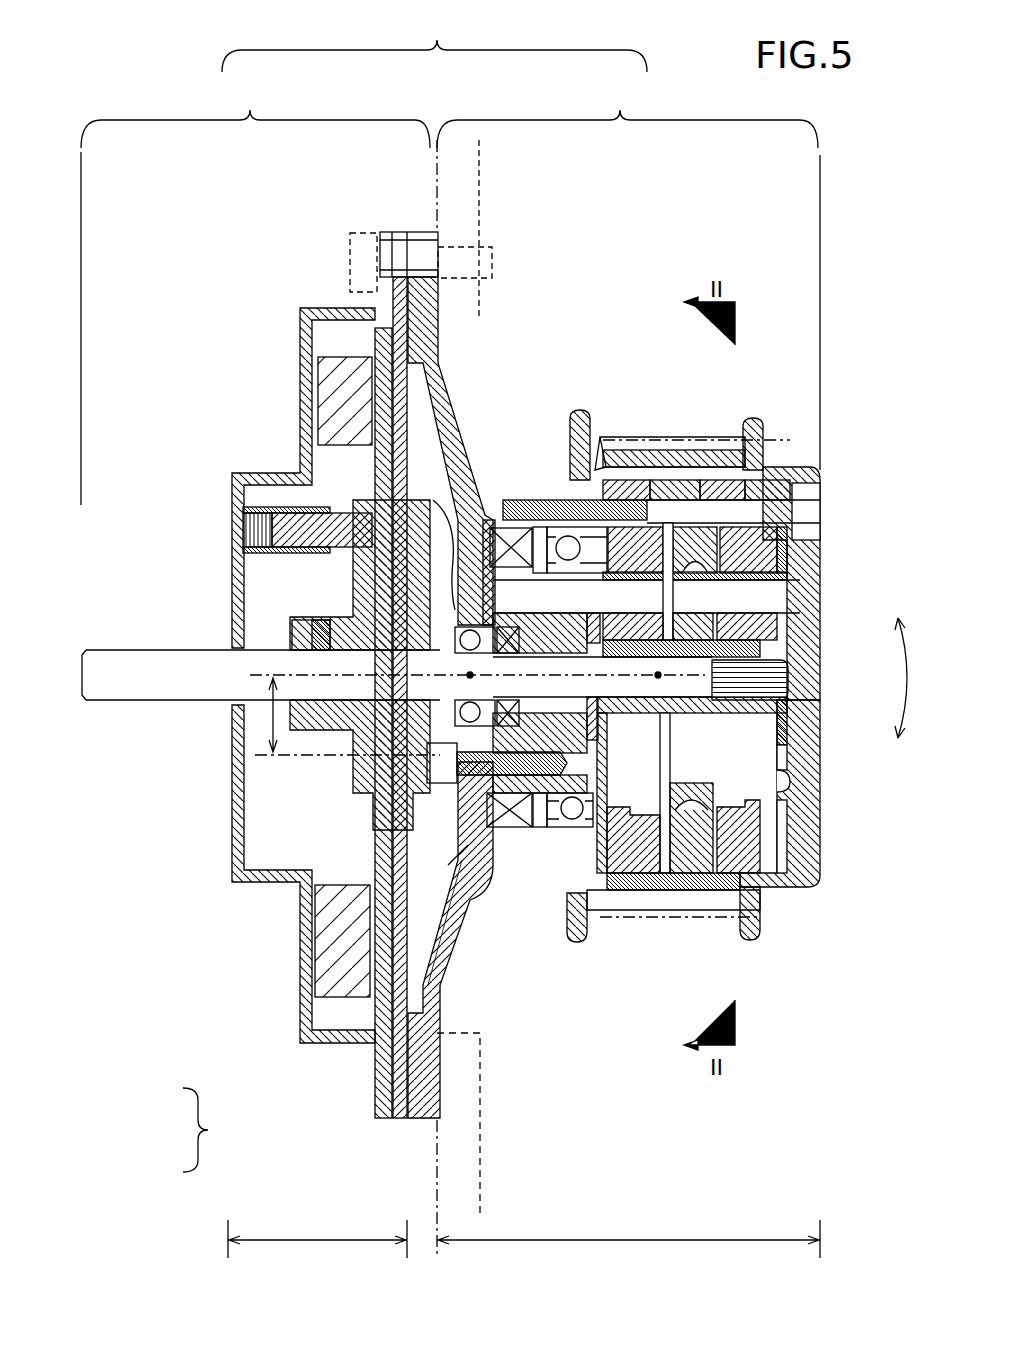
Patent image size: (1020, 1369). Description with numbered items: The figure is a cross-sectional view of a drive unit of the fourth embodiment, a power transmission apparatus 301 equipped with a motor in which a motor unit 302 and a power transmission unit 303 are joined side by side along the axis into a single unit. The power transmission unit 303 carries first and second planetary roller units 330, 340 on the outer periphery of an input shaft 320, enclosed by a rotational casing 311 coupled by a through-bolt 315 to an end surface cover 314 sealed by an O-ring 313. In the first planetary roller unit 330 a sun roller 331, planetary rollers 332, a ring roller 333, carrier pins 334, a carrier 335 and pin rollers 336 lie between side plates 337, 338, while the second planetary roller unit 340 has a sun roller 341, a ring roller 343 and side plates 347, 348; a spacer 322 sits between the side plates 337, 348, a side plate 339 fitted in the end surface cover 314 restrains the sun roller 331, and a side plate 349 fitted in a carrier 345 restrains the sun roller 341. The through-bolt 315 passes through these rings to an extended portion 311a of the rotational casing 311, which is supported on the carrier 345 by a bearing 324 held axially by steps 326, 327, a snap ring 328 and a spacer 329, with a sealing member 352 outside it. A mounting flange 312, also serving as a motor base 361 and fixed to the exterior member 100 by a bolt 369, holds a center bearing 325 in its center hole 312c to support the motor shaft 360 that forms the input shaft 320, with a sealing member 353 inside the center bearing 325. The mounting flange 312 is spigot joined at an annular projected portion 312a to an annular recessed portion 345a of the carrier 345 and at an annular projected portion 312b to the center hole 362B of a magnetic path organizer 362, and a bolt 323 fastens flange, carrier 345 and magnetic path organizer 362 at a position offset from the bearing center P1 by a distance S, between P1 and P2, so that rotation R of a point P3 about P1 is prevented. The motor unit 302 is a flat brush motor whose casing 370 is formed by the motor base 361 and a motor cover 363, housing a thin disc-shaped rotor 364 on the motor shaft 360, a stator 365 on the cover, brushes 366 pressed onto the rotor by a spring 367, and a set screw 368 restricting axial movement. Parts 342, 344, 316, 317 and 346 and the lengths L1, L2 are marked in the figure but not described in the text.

The power transmission apparatus equipped with a motor 301 is at (437, 40).
The motor unit 302 is at (250, 110).
The power transmission unit 303 is at (620, 110).
The bolt 369 is at (365, 232).
The mounting flange 312 is at (440, 353).
The motor base 361 is at (269, 697).
The motor cover 363 is at (236, 818).
The rotor 364 is at (378, 826).
The casing 370 is at (211, 1130).
The brushes 366 is at (290, 508).
The stator 365 is at (322, 948).
The spring 367 is at (243, 531).
The set screw 368 is at (292, 603).
The motor shaft 360 is at (116, 650).
The annular projected portion 312b is at (368, 566).
The center hole 362B is at (337, 600).
The center hole 312c is at (448, 700).
The bolt 323 is at (403, 785).
The center bearing 325 is at (440, 510).
The magnetic path organizer 362 is at (445, 945).
The sealing member 353 is at (522, 630).
The rotational casing 311 is at (600, 450).
The extended portion 311a is at (545, 466).
The bearing 344 is at (550, 525).
The sealing member 352 is at (512, 527).
The bearing 324 is at (518, 500).
The retaining ring 342 is at (622, 478).
The annular projected portion 312a is at (480, 495).
The annular recessed portion 345a is at (497, 582).
The ring-shaped side plate 349 is at (597, 730).
The spacer 329 is at (586, 450).
The carrier 335 is at (658, 480).
The stator 316 is at (672, 480).
The ring-shaped spacer 322 is at (716, 484).
The bolt 317 is at (704, 498).
The O-ring 313 is at (760, 460).
The through-bolt 315 is at (812, 512).
The end surface cover 314 is at (800, 545).
The pin roller 336 is at (758, 580).
The carrier pin 334 is at (770, 598).
The shaft 346 is at (645, 578).
The planetary roller 332 is at (780, 628).
The input shaft 320 is at (790, 672).
The rotation R is at (908, 678).
The carrier 345 is at (585, 760).
The sun roller 341 is at (668, 730).
The side plate 347 is at (607, 888).
The ring roller 343 is at (660, 838).
The side plate 348 is at (693, 838).
The second planetary roller unit 340 is at (644, 930).
The step 326 is at (568, 867).
The step 327 is at (546, 828).
The snap ring 328 is at (540, 793).
The ring roller 333 is at (812, 840).
The first planetary roller unit 330 is at (764, 946).
The sun roller 331 is at (782, 708).
The ring-shaped side plate 339 is at (784, 735).
The ring-shaped side plate 338 is at (786, 765).
The ring-shaped side plate 337 is at (786, 800).
The distance S is at (347, 716).
The center of the center bearing P1 is at (473, 675).
The bolt position P2 is at (448, 867).
The point P3 is at (655, 675).
The exterior member 100 is at (480, 1153).
The length L1 is at (628, 1236).
The length L2 is at (317, 1235).